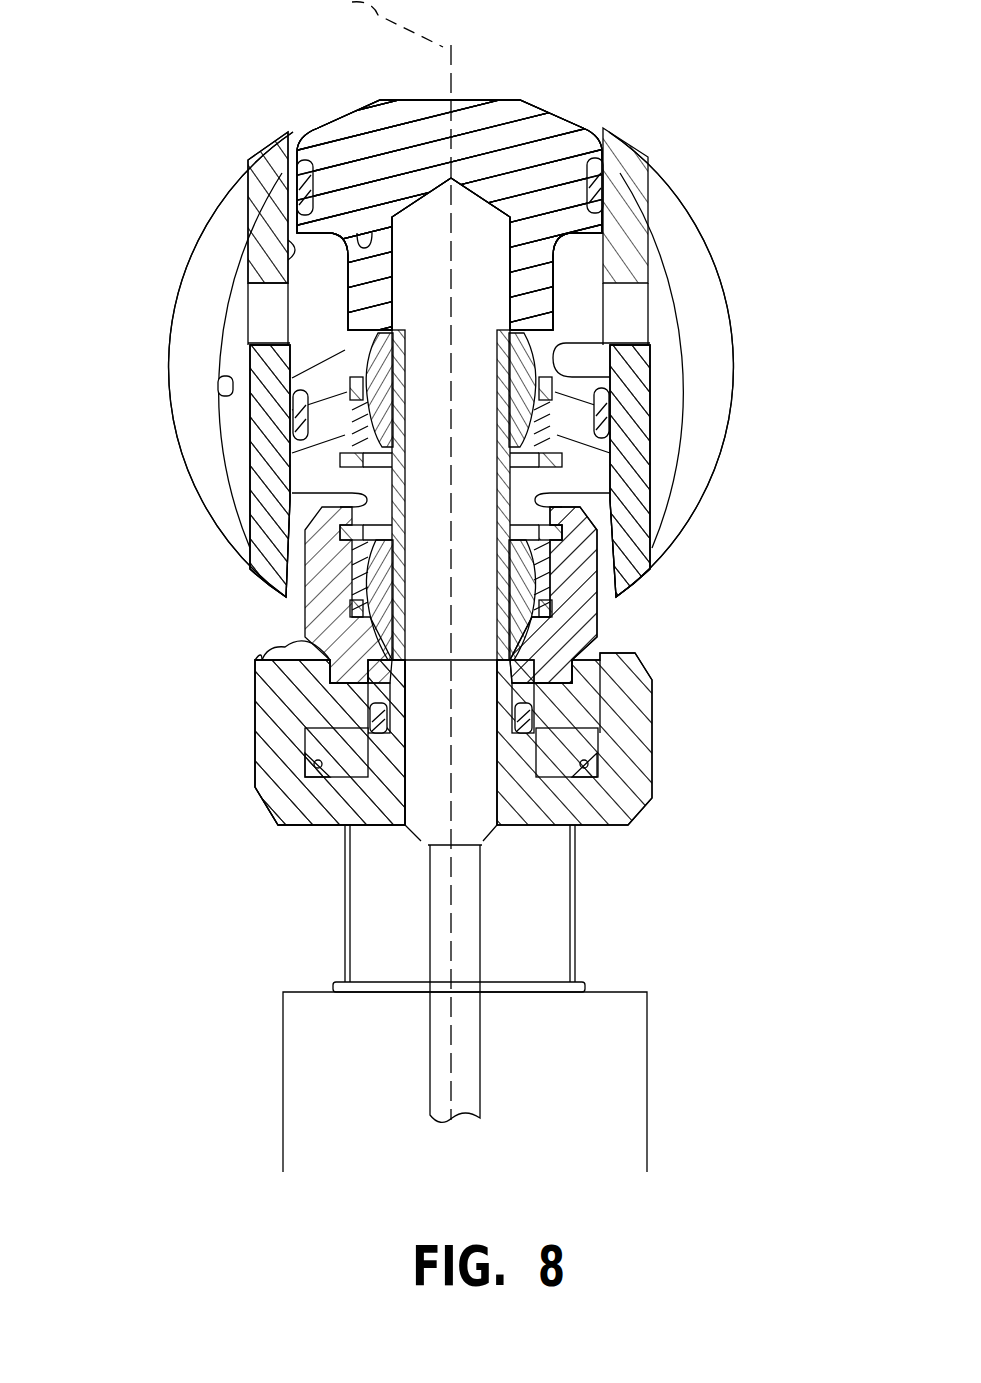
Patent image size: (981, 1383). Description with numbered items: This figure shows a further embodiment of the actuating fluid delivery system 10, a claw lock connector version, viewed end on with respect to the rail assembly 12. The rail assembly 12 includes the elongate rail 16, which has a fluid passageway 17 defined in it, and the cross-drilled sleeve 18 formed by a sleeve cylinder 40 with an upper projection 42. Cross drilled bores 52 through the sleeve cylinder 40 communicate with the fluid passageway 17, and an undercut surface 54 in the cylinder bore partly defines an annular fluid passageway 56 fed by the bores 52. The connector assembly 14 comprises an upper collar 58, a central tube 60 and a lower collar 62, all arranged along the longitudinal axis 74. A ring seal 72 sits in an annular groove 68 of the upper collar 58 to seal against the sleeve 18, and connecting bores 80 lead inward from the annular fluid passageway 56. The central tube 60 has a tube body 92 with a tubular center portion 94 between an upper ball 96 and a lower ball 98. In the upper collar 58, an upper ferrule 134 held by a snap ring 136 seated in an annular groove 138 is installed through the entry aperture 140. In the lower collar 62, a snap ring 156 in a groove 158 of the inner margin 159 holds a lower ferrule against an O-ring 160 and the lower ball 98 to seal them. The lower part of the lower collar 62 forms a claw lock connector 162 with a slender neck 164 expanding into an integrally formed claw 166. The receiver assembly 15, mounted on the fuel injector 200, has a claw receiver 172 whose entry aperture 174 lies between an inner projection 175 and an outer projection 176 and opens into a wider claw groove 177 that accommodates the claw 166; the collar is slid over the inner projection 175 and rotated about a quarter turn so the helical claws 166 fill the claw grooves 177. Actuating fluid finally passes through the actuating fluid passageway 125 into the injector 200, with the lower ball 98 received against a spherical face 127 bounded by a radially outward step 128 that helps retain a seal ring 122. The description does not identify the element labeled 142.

The actuating fluid delivery system 10 is at (207, 132).
The rail assembly 12 is at (170, 258).
The connector assembly 14 is at (330, 122).
The receiver assembly 15 is at (283, 672).
The elongate rail 16 is at (167, 317).
The fluid passageway 17 is at (218, 383).
The cross-drilled sleeve 18 is at (247, 192).
The sleeve cylinder 40 is at (278, 148).
The upper projection 42 is at (262, 152).
The cross drilled bores 52 is at (270, 345).
The undercut surface 54 is at (292, 250).
The annular fluid passageway 56 is at (300, 287).
The upper collar 58 is at (620, 215).
The central tube 60 is at (297, 445).
The lower collar 62 is at (360, 772).
The annular groove 68 is at (587, 130).
The ring seal 72 is at (632, 150).
The longitudinal axis 74 is at (348, 4).
The connecting bores 80 is at (368, 233).
The tube body 92 is at (612, 258).
The tubular center portion 94 is at (613, 527).
The ball 96 is at (602, 303).
The ball 98 is at (600, 578).
The seal ring 122 is at (610, 380).
The actuating fluid passageway 125 is at (478, 892).
The spherical face 127 is at (580, 650).
The radially outward step 128 is at (598, 608).
The upper ferrule 134 is at (620, 450).
The snap ring 136 is at (580, 503).
The annular groove 138 is at (565, 461).
The entry aperture 140 is at (570, 492).
The ring lower edge 142 is at (284, 594).
The snap ring 156 is at (286, 565).
The groove 158 is at (350, 523).
The inner margin 159 is at (330, 500).
The O-ring 160 is at (303, 616).
The claw lock connector 162 is at (595, 735).
The neck 164 is at (600, 690).
The claw 166 is at (590, 790).
The claw receiver 172 is at (262, 660).
The entry aperture 174 is at (268, 684).
The inner projection 175 is at (395, 735).
The outer projection 176 is at (283, 710).
The claw groove 177 is at (307, 755).
The fuel injector 200 is at (283, 1075).